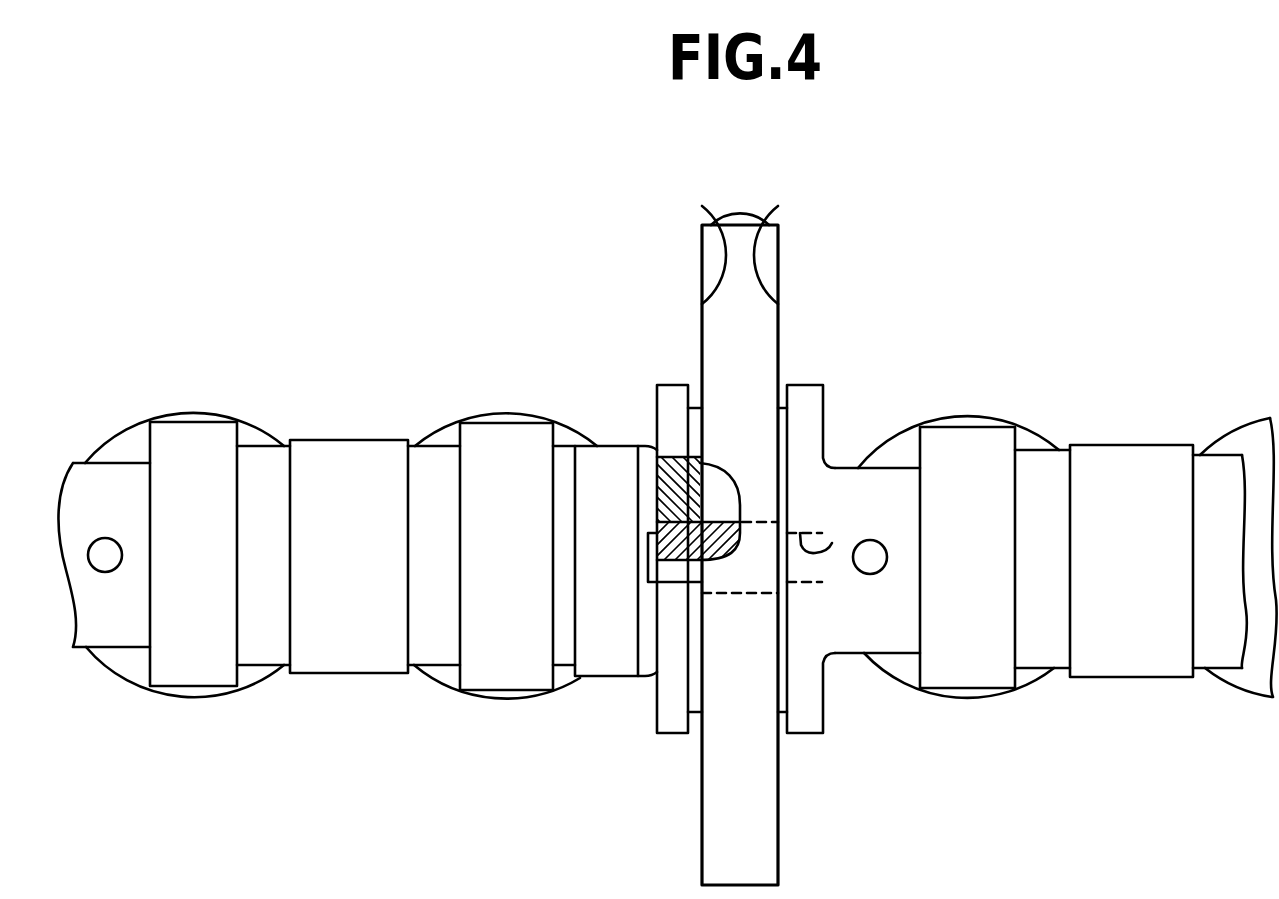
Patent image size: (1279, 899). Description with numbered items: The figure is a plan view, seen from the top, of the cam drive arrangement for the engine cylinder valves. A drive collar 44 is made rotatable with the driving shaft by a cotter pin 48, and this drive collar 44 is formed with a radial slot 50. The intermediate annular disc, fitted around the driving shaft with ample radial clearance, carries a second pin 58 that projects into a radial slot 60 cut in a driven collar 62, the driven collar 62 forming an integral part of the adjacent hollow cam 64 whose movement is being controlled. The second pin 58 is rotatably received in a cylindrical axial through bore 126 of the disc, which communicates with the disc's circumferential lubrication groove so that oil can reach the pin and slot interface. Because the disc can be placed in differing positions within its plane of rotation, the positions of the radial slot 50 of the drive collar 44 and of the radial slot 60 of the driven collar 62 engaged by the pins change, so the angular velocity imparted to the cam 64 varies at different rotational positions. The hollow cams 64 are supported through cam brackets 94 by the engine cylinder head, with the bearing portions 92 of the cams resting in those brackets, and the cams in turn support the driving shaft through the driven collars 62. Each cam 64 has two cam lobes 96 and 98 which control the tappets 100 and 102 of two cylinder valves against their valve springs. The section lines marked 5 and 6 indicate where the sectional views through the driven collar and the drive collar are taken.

The drive collar 44 is at (827, 402).
The cotter pin 48 is at (107, 538).
The radial slot 50 is at (833, 548).
The second pin 58 is at (678, 573).
The radial slot 60 is at (687, 530).
The driven collar 62 is at (668, 385).
The hollow cam 64 is at (663, 546).
The journal 92 is at (340, 440).
The cam bracket 94 is at (610, 660).
The cam lobe 96 is at (160, 578).
The cam lobe 98 is at (470, 578).
The tappet 100 is at (138, 424).
The tappet 102 is at (510, 699).
The cylindrical axial through bore 126 is at (737, 582).
The section line 5- 5 is at (695, 800).
The section line 6- 6 is at (829, 813).